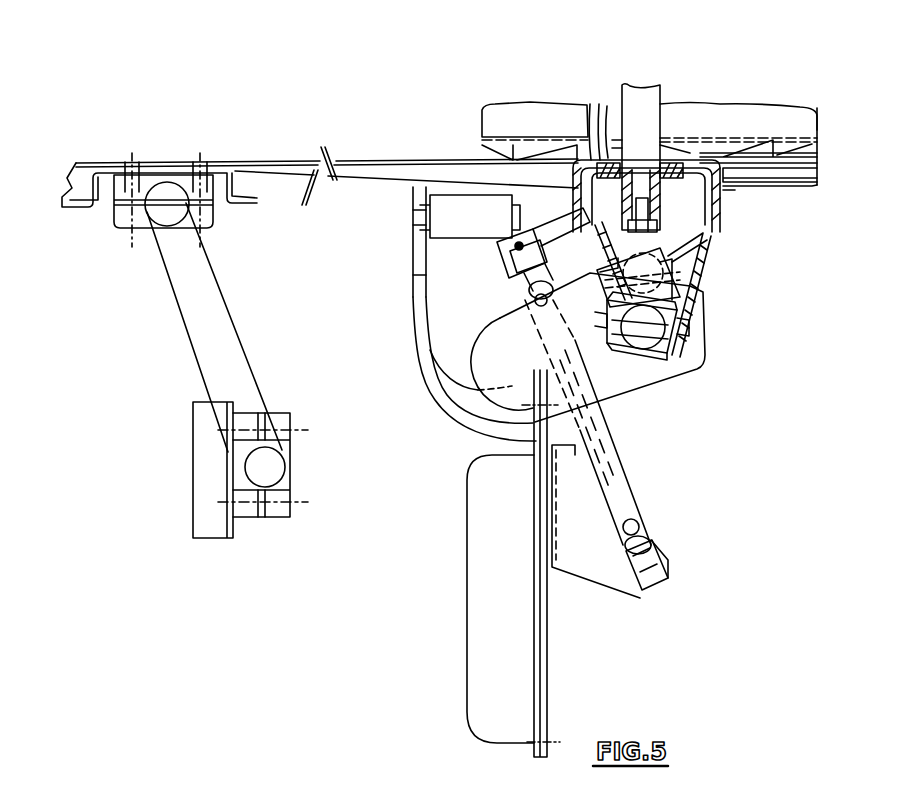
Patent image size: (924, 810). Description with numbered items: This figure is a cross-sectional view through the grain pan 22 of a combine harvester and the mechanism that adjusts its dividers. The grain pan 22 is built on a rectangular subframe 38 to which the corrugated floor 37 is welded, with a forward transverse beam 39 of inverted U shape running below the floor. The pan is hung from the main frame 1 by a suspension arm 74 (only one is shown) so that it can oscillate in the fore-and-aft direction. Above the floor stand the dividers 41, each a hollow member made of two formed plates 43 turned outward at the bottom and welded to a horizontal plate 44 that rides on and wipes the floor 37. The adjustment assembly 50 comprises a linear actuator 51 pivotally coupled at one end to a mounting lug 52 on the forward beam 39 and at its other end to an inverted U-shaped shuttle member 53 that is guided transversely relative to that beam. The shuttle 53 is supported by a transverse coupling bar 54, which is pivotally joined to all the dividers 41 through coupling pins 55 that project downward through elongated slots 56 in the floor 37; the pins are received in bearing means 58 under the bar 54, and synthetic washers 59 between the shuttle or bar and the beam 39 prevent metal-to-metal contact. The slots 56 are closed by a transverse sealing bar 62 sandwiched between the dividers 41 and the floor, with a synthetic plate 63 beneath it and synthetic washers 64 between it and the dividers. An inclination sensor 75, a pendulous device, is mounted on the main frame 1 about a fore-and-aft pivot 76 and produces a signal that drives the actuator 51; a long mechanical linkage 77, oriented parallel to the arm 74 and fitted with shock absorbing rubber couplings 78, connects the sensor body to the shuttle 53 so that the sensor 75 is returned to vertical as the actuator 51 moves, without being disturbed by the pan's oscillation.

The main frame 1 is at (212, 540).
The grain pan 22 is at (431, 128).
The corrugated floor 37 is at (768, 135).
The rectangular subframe 38 is at (790, 180).
The forward transverse beam 39 is at (728, 182).
The divider 41 is at (735, 104).
The formed plate 43 is at (524, 104).
The horizontal plate 44 is at (818, 128).
The drive assembly 50 is at (748, 362).
The linear actuator 51 is at (665, 390).
The mounting lug 52 is at (695, 268).
The shuttle member 53 is at (700, 243).
The transverse coupling bar 54 is at (672, 188).
The coupling pin 55 is at (665, 108).
The elongated slot 56 is at (724, 148).
The bearing means 58 is at (705, 228).
The washer 59 is at (812, 168).
The transverse sealing bar 62 is at (603, 100).
The plate of synthetic material 63 is at (589, 120).
The washer of synthetic material 64 is at (610, 125).
The mounting arm 74 is at (174, 298).
The inclination sensor 75 is at (466, 556).
The pivot 76 is at (413, 225).
The mechanical linkage 77 is at (626, 480).
The shock absorbing rubber coupling 78 is at (548, 266).